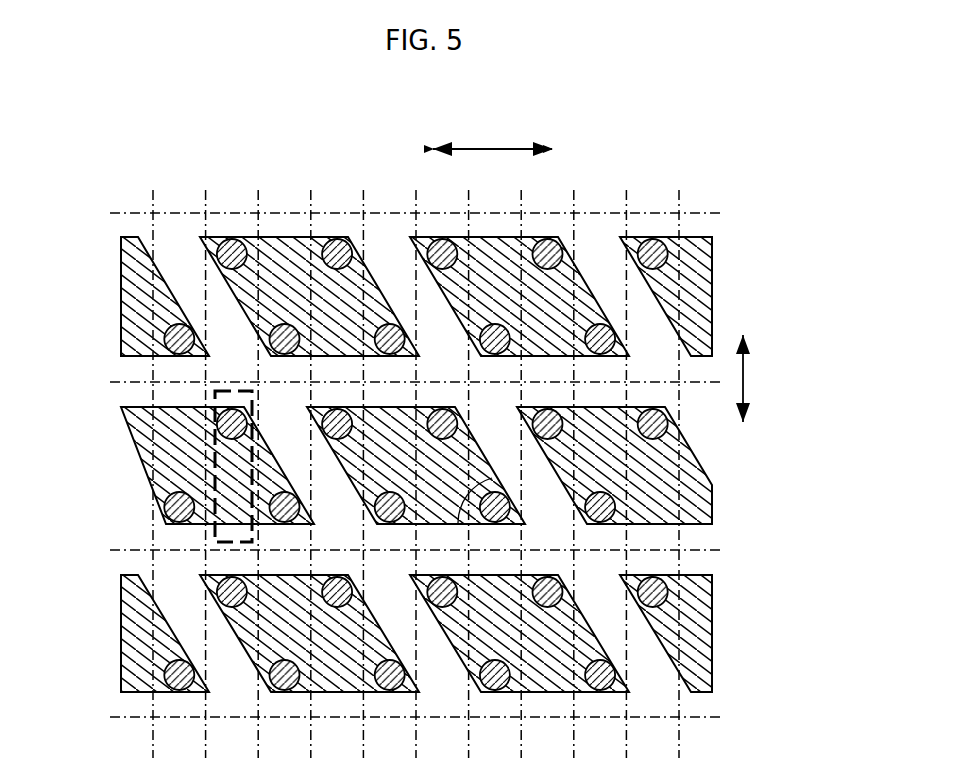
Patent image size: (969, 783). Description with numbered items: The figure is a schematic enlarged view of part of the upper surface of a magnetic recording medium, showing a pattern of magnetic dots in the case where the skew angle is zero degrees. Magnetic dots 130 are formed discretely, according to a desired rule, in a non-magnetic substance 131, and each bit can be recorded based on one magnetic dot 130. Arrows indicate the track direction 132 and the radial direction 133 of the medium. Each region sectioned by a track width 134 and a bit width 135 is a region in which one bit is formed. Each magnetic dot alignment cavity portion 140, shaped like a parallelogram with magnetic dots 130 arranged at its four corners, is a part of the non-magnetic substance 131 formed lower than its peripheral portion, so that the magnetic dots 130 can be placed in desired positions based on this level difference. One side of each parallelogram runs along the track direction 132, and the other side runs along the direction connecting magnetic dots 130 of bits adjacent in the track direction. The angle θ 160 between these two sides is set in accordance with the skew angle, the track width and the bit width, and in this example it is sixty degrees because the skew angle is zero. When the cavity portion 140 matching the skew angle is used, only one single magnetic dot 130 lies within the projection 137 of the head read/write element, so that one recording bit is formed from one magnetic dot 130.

The magnetic dot 130 is at (668, 247).
The non-magnetic substance 131 is at (655, 223).
The track direction 132 is at (492, 133).
The radial direction 133 is at (771, 378).
The track width 134 is at (105, 550).
The bit width 135 is at (206, 185).
The projection of the head RW element 137 is at (212, 445).
The magnetic dot alignment cavity portion 140 is at (295, 252).
The angle θ 160 is at (492, 479).